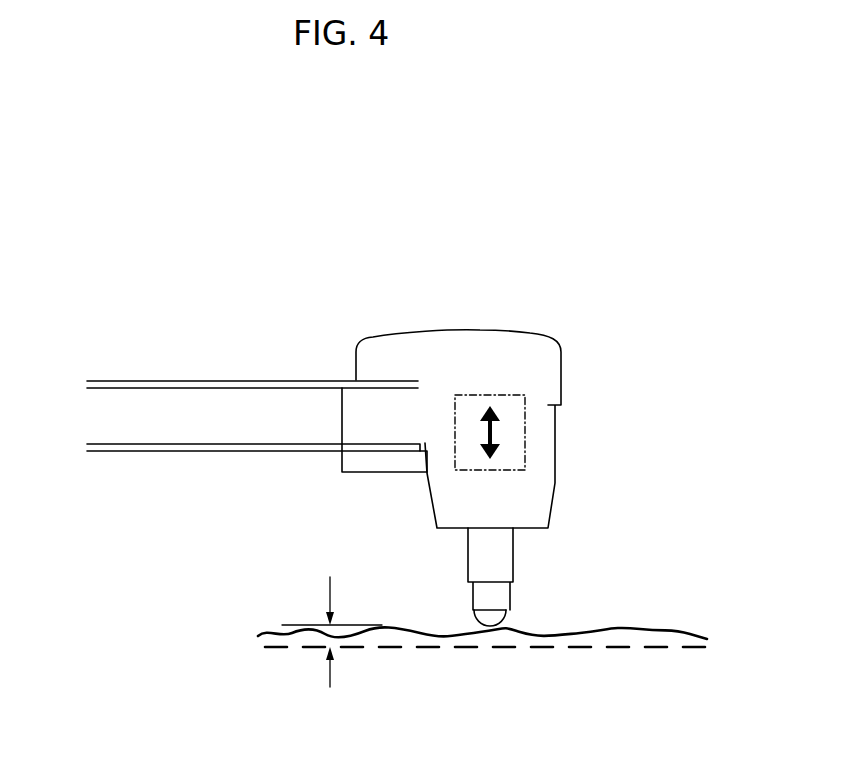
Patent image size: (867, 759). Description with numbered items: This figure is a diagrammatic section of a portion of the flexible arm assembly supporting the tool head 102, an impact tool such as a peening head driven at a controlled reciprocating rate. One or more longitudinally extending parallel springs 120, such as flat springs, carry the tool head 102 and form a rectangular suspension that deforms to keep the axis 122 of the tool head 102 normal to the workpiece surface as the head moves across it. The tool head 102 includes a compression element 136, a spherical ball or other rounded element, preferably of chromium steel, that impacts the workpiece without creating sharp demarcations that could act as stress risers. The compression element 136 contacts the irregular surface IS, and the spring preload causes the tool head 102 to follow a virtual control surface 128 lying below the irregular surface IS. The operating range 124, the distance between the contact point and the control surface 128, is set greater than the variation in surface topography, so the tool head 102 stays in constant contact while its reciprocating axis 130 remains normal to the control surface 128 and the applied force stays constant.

The tool head 102 is at (518, 333).
The parallel springs 120 is at (282, 372).
The axis of the tool head 122 is at (517, 443).
The reciprocating axis 130 is at (492, 433).
The compression element 136 is at (507, 610).
The irregular surface IS is at (655, 625).
The virtual control surface 128 is at (507, 650).
The operating range 124 is at (336, 649).